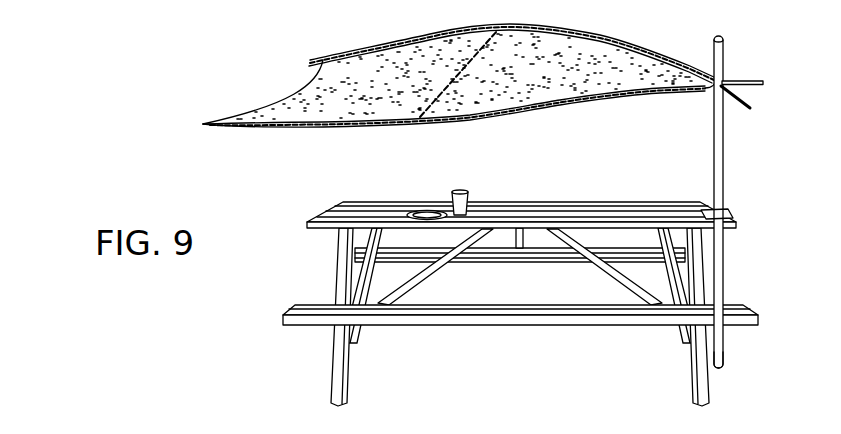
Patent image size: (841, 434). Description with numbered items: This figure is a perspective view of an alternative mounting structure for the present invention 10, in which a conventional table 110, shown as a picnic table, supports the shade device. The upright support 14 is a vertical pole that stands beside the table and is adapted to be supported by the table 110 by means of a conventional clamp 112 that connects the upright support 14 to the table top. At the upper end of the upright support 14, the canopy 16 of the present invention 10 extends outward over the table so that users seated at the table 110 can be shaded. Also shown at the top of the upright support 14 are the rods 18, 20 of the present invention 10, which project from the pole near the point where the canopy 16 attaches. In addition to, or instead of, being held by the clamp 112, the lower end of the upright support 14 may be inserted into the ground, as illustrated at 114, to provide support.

The present invention 10 is at (262, 90).
The upright support 14 is at (714, 152).
The canopy 16 is at (582, 67).
The rod 18 is at (752, 108).
The rod 20 is at (755, 81).
The table 110 is at (528, 203).
The clamp 112 is at (724, 212).
The lower end of the upright support inserted into the ground 114 is at (737, 361).